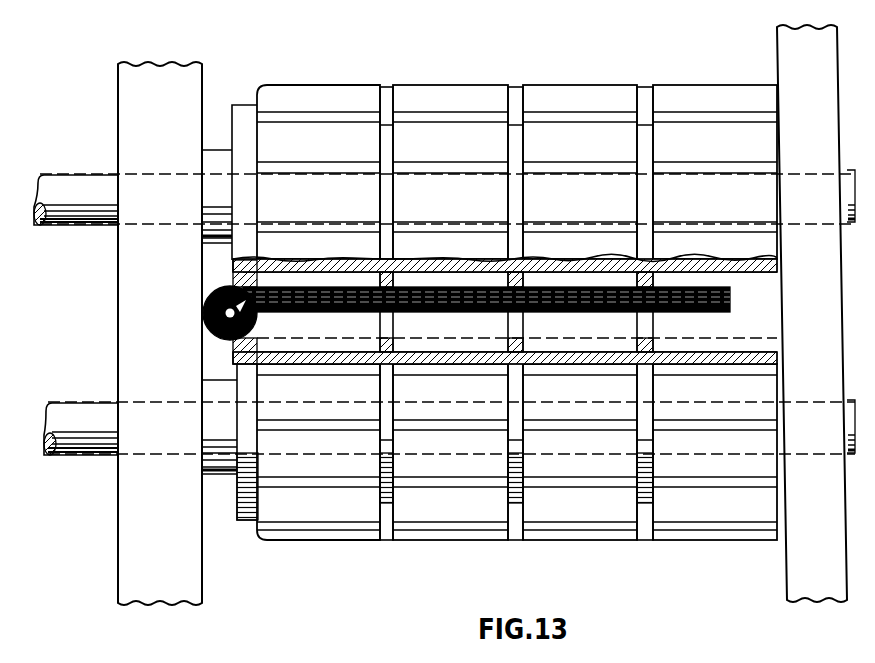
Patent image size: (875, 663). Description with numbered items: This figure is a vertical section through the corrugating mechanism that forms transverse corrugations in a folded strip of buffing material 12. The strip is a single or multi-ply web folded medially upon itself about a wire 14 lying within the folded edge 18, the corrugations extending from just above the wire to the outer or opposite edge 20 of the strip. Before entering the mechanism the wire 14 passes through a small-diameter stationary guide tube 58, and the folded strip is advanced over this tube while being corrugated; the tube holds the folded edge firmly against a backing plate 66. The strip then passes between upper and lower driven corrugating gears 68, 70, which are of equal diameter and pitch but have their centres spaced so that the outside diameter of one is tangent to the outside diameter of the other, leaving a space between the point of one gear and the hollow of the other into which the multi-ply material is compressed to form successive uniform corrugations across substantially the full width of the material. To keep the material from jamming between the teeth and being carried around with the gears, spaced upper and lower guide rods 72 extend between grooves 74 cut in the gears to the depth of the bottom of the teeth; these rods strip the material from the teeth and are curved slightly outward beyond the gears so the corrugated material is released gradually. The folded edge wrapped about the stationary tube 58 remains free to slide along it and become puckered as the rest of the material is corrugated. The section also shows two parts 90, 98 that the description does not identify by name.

The buffing material 12 is at (577, 290).
The wire 14 is at (206, 290).
The folded edge 18 is at (204, 316).
The outer or opposite edge 20 is at (730, 306).
The stationary guide tube 58 is at (205, 332).
The backing plate 66 is at (134, 281).
The upper corrugating gear 68 is at (566, 92).
The lower corrugating gear 70 is at (585, 540).
The guide rods 72 is at (396, 273).
The grooves 74 is at (514, 90).
The tube 90 is at (92, 176).
The tube 98 is at (97, 403).